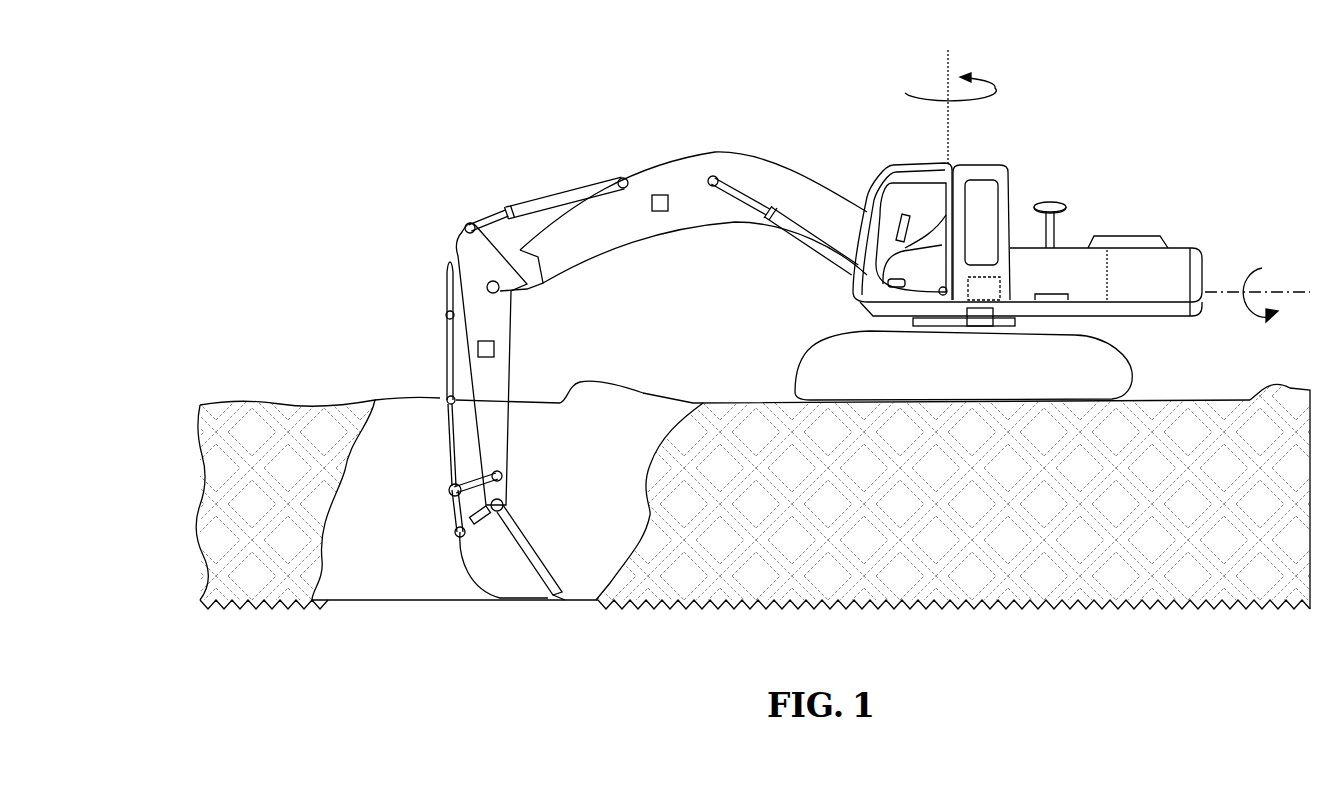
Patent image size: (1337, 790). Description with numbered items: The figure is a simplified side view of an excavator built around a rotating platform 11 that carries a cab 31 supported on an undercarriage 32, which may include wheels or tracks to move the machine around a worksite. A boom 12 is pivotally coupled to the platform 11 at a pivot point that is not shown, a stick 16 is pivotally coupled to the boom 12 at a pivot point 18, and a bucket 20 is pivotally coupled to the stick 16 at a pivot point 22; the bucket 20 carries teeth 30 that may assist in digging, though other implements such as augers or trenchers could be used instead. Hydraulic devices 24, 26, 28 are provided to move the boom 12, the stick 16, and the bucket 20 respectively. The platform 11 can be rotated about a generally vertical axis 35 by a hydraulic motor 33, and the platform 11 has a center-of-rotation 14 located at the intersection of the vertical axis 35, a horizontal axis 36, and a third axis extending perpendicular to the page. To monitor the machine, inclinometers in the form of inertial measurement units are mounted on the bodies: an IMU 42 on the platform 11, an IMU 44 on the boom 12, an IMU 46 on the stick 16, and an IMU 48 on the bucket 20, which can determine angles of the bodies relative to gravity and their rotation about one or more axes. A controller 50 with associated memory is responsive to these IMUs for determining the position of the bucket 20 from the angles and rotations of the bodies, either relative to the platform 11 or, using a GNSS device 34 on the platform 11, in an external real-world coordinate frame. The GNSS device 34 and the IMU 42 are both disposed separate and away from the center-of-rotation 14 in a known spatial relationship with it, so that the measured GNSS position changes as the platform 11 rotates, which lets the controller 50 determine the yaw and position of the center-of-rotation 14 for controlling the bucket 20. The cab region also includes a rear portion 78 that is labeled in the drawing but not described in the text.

The rotating platform 11 is at (1178, 256).
The boom 12 is at (773, 186).
The center-of-rotation 14 is at (955, 326).
The stick 16 is at (450, 268).
The pivot point 18 is at (465, 232).
The bucket 20 is at (468, 570).
The pivot point 22 is at (505, 508).
The hydraulic device 24 is at (812, 232).
The hydraulic device 26 is at (573, 192).
The hydraulic device 28 is at (444, 340).
The teeth 30 is at (580, 594).
The cab 31 is at (913, 190).
The undercarriage 32 is at (1128, 368).
The hydraulic motor 33 is at (986, 327).
The GNSS device 34 is at (1068, 207).
The vertical axis 35 is at (950, 56).
The horizontal axis 36 is at (1297, 292).
The IMU 42 is at (1070, 298).
The IMU 44 is at (660, 211).
The IMU 46 is at (494, 349).
The IMU 48 is at (468, 516).
The controller 50 is at (988, 275).
The cab rear door 78 is at (957, 180).